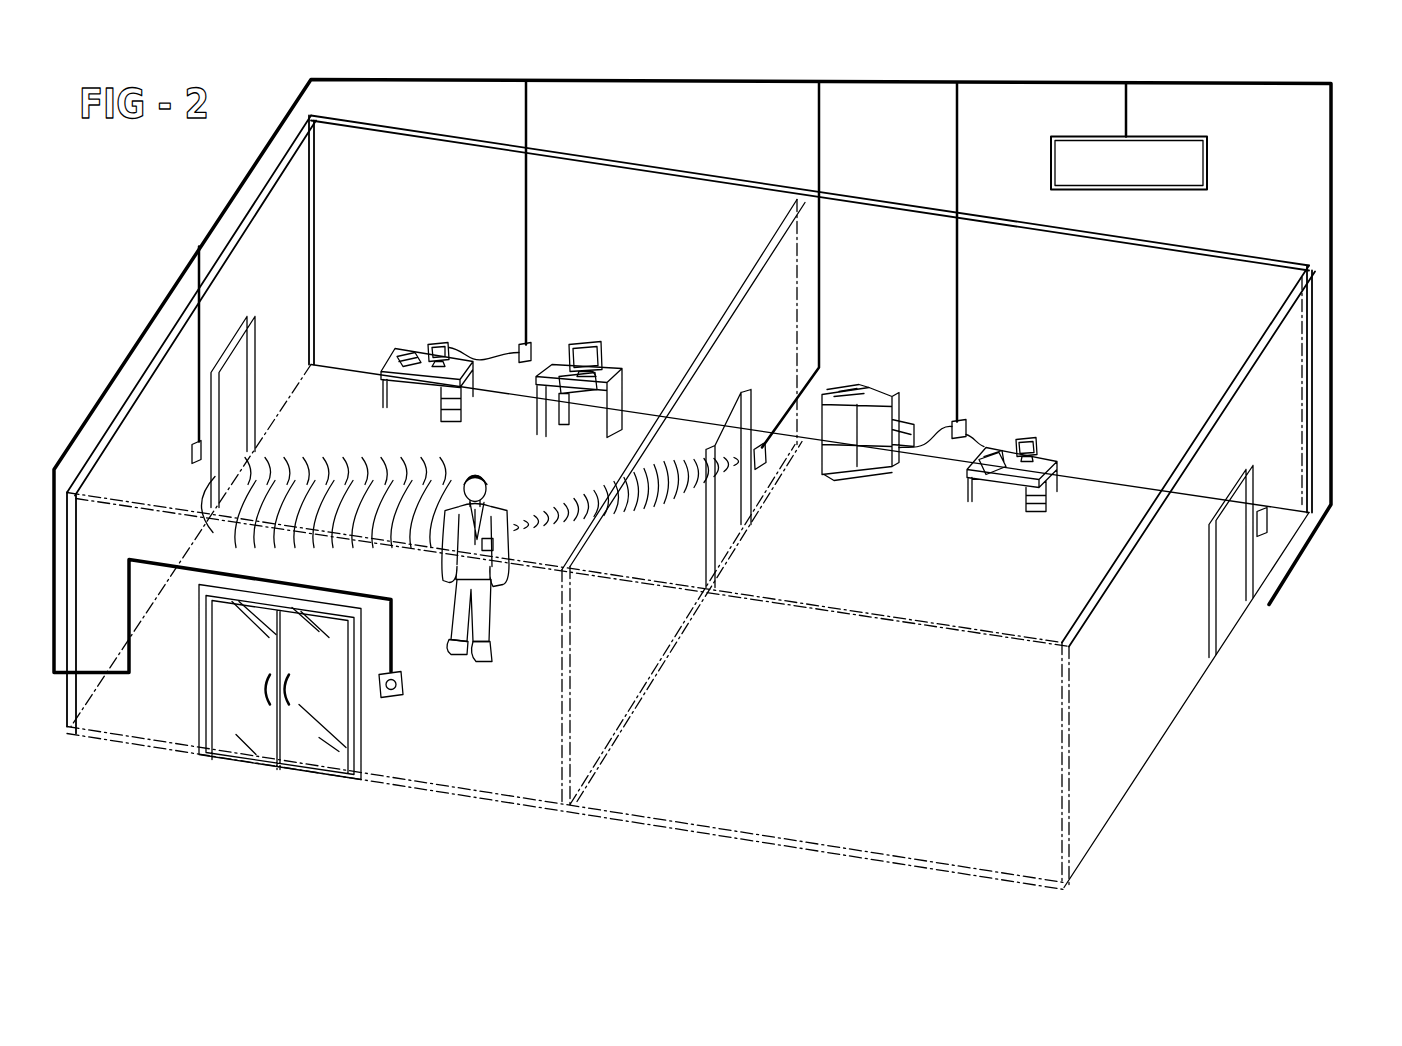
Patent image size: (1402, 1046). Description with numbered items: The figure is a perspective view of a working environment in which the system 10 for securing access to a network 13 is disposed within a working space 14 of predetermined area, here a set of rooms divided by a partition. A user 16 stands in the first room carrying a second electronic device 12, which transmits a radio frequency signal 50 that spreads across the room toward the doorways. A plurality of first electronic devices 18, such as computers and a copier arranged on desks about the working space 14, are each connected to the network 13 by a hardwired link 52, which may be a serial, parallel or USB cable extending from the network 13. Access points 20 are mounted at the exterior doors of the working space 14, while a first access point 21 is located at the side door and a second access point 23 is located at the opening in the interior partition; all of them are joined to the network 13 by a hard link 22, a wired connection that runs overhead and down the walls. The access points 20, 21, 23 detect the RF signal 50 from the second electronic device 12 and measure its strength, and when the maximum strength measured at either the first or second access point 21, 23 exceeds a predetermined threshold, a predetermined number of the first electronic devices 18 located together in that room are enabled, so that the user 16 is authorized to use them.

The system 10 is at (1246, 761).
The second electronic device 12 is at (495, 540).
The network 13 is at (1056, 157).
The working space 14 is at (1233, 168).
The user 16 is at (497, 503).
The first electronic device 18 is at (412, 340).
The access point 20 is at (403, 684).
The first access point 21 is at (194, 446).
The hard link 22 is at (1332, 108).
The second access point 23 is at (760, 453).
The radio frequency signal 50 is at (322, 510).
The hardwired link 52 is at (530, 345).